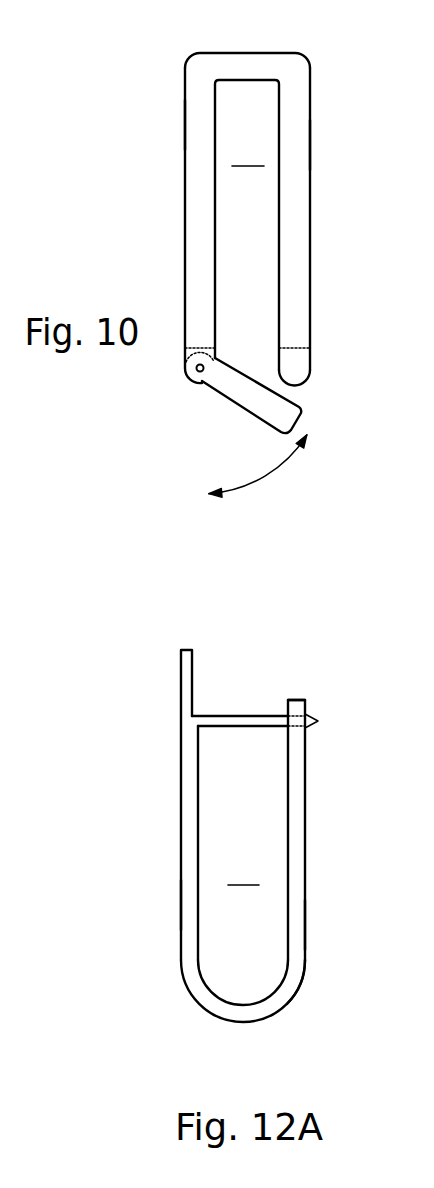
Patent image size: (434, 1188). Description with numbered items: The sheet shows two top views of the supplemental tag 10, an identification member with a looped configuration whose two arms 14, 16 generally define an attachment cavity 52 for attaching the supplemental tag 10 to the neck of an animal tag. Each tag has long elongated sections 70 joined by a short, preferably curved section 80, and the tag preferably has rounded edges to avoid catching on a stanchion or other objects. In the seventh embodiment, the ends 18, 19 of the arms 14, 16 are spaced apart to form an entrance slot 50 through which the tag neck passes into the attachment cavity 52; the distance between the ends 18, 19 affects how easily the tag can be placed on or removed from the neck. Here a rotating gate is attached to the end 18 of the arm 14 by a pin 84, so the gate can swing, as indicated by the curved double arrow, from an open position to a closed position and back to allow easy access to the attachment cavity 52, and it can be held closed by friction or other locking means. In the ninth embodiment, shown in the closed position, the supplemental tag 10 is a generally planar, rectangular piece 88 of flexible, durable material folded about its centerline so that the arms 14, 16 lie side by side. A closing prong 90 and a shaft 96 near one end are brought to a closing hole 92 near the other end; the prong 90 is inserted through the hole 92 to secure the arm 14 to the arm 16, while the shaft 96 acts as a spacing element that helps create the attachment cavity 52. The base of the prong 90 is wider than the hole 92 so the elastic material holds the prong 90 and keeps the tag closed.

In FIG. 10, the supplemental tag 10 is at (163, 38).
In FIG. 12A, the supplemental tag 10 is at (158, 631).
In FIG. 10, the arm 14 is at (185, 190).
In FIG. 12A, the arm 14 is at (181, 822).
In FIG. 10, the arm 16 is at (310, 248).
In FIG. 12A, the arm 16 is at (305, 852).
In FIG. 10, the end of arm 18 is at (258, 418).
In FIG. 10, the end of arm 19 is at (310, 382).
In FIG. 10, the entrance slot 50 is at (263, 373).
In FIG. 10, the attachment cavity 52 is at (247, 225).
In FIG. 12A, the attachment cavity 52 is at (243, 872).
In FIG. 10, the elongated section 70 is at (185, 122).
In FIG. 12A, the elongated section 70 is at (181, 908).
In FIG. 10, the curved section 80 is at (278, 53).
In FIG. 12A, the curved section 80 is at (250, 1022).
In FIG. 10, the pin 84 is at (196, 372).
In FIG. 12A, the rectangular piece 88 is at (320, 993).
In FIG. 12A, the closing prong 90 is at (320, 726).
In FIG. 12A, the closing hole 92 is at (307, 705).
In FIG. 12A, the shaft 96 is at (250, 716).